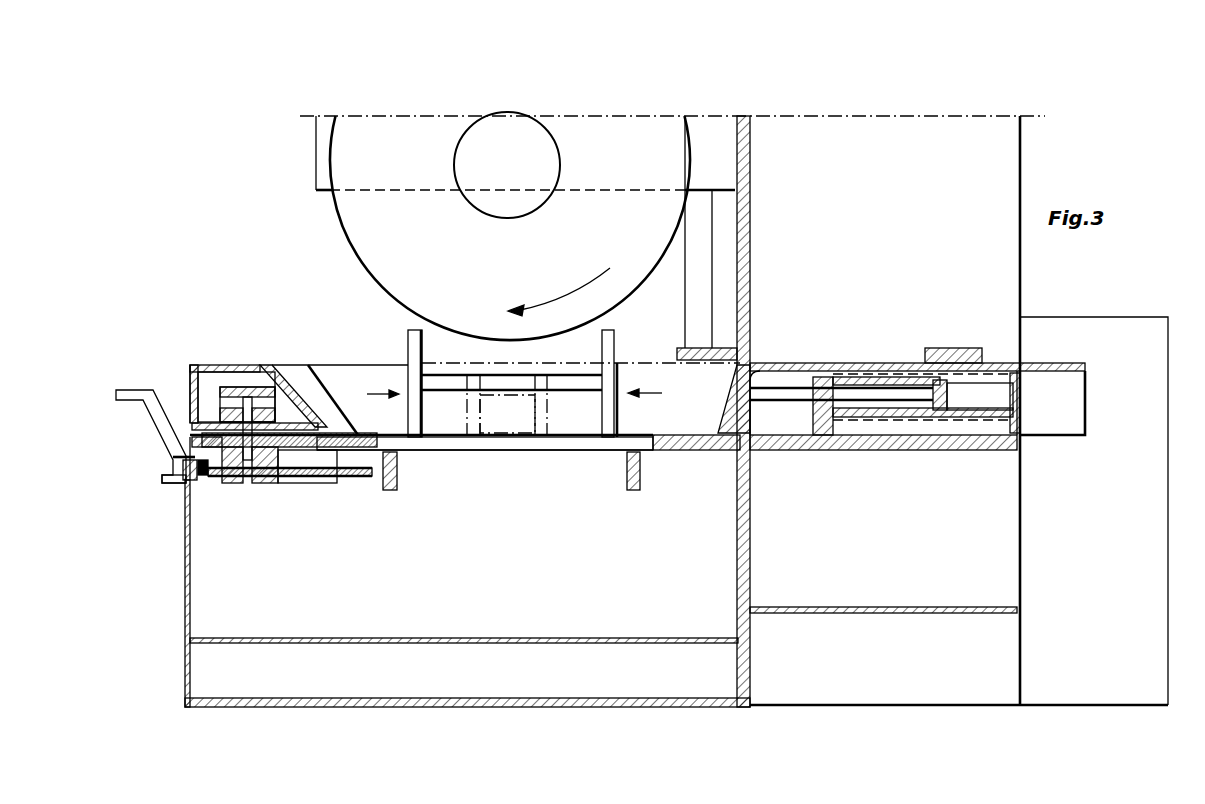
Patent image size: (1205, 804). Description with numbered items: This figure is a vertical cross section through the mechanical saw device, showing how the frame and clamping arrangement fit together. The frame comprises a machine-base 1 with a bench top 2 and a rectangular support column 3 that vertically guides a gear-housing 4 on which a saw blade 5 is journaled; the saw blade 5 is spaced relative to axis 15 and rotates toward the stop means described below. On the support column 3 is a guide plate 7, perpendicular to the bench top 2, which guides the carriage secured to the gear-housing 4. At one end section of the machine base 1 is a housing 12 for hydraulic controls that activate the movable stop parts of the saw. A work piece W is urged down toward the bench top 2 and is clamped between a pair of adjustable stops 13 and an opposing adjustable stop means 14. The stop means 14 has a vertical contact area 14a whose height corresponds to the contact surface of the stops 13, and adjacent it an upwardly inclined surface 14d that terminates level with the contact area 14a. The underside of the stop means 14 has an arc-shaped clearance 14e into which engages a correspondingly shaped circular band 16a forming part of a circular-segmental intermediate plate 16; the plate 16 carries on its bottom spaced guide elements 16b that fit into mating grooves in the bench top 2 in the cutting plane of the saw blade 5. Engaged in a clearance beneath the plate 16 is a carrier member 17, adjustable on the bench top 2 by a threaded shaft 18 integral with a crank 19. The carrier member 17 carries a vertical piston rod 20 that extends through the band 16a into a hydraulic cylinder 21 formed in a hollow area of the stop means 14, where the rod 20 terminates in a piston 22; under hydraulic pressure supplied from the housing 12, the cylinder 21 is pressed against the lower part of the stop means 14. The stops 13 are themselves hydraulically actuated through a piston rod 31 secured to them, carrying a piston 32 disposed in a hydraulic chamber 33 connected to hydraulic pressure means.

The machine-base 1 is at (482, 622).
The bench top 2 is at (548, 440).
The support column 3 is at (1020, 142).
The gear-housing 4 is at (320, 128).
The saw blade 5 is at (345, 176).
The guide plate 7 is at (752, 262).
The housing 12 is at (1080, 690).
The adjustable stops 13 is at (672, 428).
The stop means 14 is at (357, 370).
The vertical contact area 14a is at (403, 378).
The upwardly inclined surface 14d is at (285, 390).
The clearance 14e is at (177, 390).
The axis 15 is at (530, 128).
The intermediate plate 16 is at (210, 443).
The circular band 16a is at (149, 424).
The guide elements 16b is at (172, 482).
The carrier member 17 is at (263, 457).
The threaded shaft 18 is at (228, 483).
The crank 19 is at (160, 425).
The vertical piston rod 20 is at (238, 390).
The hydraulic cylinder 21 is at (220, 385).
The piston 22 is at (260, 387).
The piston rod 31 is at (770, 392).
The piston 32 is at (947, 382).
The hydraulic chamber 33 is at (860, 387).
The work piece W is at (475, 385).